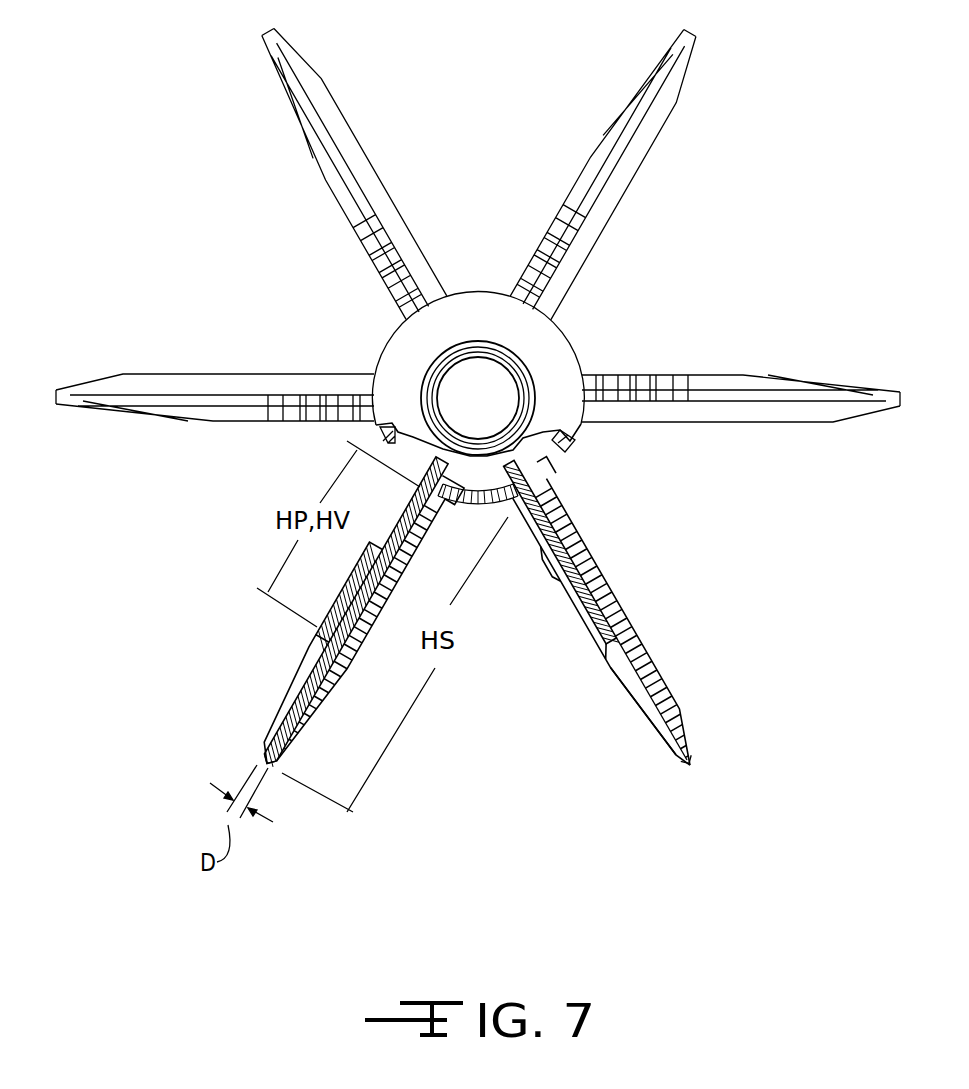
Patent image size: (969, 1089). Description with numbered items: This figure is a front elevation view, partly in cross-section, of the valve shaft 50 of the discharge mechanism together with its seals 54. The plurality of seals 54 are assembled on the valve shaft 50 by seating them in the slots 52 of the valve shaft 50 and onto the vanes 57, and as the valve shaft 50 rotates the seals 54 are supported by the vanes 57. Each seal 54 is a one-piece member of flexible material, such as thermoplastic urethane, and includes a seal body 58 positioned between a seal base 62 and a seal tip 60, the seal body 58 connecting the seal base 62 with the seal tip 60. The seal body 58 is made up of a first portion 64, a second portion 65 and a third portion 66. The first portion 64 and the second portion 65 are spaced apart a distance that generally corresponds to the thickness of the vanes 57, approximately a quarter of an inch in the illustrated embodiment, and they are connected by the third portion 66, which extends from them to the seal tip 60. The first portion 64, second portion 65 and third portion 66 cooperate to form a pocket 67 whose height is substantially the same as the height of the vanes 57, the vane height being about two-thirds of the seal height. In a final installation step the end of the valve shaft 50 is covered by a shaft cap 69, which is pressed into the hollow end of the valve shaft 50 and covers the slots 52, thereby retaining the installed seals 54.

The valve shaft 50 is at (576, 444).
The slots 52 is at (550, 470).
The seals 54 is at (478, 417).
The vanes 57 is at (540, 533).
The seal body 58 is at (618, 587).
The seal tip 60 is at (697, 40).
The seal base 62 is at (447, 500).
The first portion 64 is at (600, 553).
The second portion 65 is at (562, 603).
The third portion 66 is at (653, 688).
The pocket 67 is at (617, 613).
The shaft cap 69 is at (570, 338).